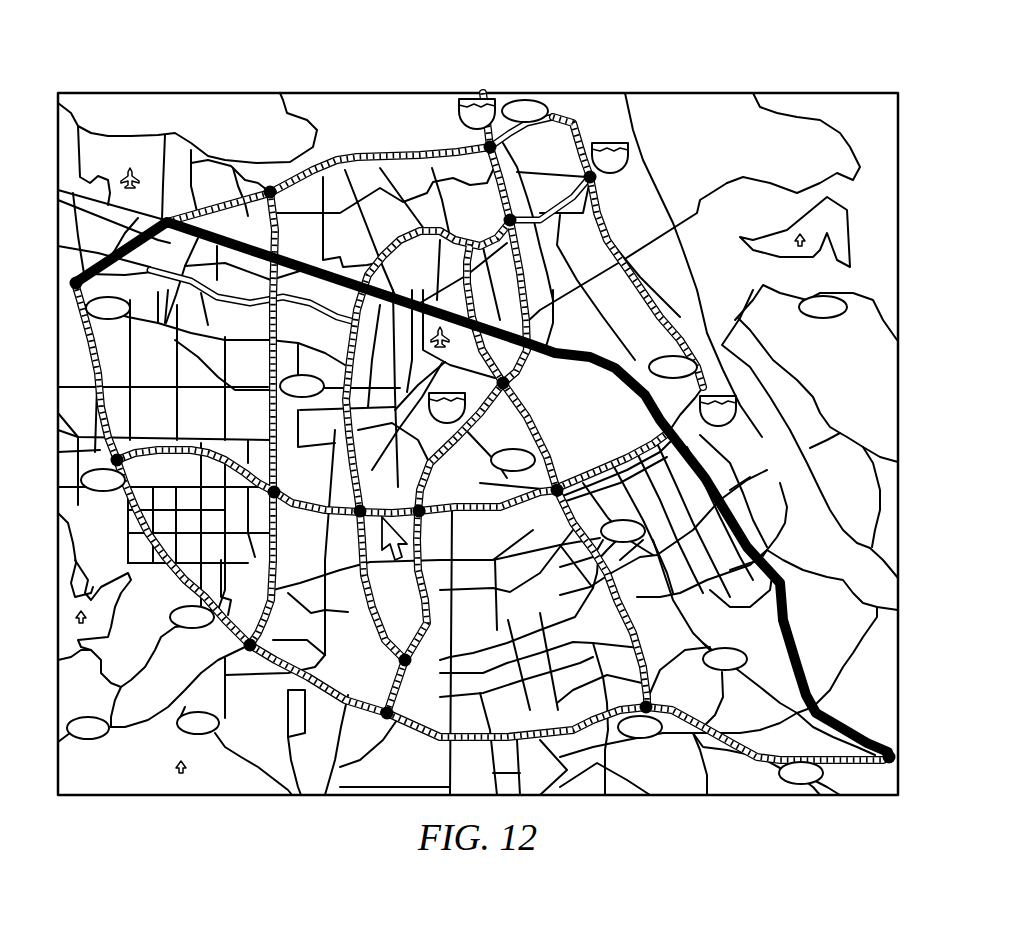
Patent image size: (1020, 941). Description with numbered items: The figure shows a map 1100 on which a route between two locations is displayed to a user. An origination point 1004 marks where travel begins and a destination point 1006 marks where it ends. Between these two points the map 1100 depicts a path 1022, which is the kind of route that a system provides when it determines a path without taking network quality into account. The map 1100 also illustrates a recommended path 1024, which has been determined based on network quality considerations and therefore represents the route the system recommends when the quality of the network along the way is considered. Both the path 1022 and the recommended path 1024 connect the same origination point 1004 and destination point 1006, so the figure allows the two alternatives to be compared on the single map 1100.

The map 1100 is at (478, 446).
The origination point 1004 is at (91, 286).
The destination point 1006 is at (880, 762).
The path 1022 is at (704, 470).
The recommended path 1024 is at (342, 697).